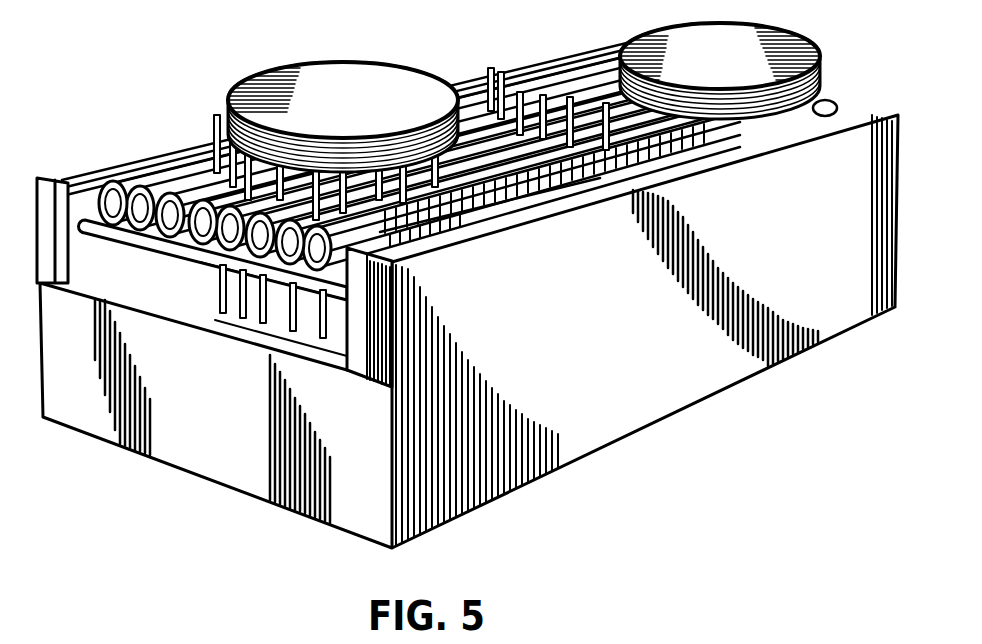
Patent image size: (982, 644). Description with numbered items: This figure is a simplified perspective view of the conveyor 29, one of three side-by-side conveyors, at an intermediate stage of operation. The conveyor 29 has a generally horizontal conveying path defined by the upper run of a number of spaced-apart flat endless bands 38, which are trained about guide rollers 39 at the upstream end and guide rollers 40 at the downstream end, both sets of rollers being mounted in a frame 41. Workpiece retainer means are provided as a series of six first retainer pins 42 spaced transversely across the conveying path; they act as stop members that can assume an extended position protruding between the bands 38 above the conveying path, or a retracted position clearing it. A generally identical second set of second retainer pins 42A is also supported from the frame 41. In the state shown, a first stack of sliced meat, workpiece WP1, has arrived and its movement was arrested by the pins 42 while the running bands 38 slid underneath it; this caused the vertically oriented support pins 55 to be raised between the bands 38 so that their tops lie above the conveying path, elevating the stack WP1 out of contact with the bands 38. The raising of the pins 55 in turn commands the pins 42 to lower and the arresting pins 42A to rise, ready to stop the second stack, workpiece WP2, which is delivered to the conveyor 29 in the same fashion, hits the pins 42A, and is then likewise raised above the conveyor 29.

The conveyor 29 is at (543, 48).
The endless bands 38 is at (488, 133).
The guide rollers 39 is at (824, 108).
The guide rollers 40 is at (127, 182).
The frame 41 is at (590, 345).
The first retainer pins 42 is at (213, 140).
The second retainer pins 42A is at (490, 68).
The support pins 55 is at (425, 213).
The workpiece WP1 is at (362, 111).
The workpiece WP2 is at (750, 74).